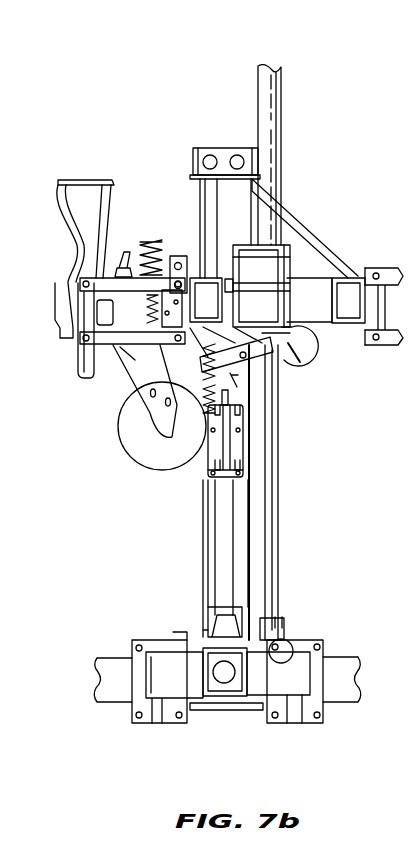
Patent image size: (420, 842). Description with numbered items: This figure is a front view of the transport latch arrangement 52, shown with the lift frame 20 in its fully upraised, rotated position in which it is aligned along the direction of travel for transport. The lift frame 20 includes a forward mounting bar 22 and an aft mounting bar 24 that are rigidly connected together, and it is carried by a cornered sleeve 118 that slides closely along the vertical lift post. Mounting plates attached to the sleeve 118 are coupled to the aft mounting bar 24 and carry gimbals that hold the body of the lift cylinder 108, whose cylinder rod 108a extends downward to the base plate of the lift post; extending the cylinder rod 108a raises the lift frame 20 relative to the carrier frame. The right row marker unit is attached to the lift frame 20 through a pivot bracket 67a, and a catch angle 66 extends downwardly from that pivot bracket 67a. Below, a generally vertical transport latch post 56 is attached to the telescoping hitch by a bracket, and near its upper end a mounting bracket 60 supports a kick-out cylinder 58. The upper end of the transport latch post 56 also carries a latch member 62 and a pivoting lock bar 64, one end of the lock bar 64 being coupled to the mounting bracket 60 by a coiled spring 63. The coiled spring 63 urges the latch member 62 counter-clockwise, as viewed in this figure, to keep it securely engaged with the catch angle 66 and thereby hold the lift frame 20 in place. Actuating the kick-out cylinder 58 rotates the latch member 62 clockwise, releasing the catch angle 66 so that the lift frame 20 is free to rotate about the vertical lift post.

The transport latch arrangement 52 is at (140, 128).
The sleeve 118 is at (230, 187).
The lift cylinder 108 is at (272, 108).
The cylinder rod 108a is at (272, 572).
The lift frame 20 is at (292, 211).
The aft mounting bar 24 is at (193, 280).
The pivot bracket 67a is at (270, 251).
The forward mounting bar 22 is at (354, 277).
The catch angle 66 is at (308, 341).
The latch member 62 is at (300, 358).
The lock bar 64 is at (272, 352).
The kick-out cylinder 58 is at (231, 449).
The mounting bracket 60 is at (239, 455).
The coiled spring 63 is at (205, 408).
The transport latch post 56 is at (222, 549).